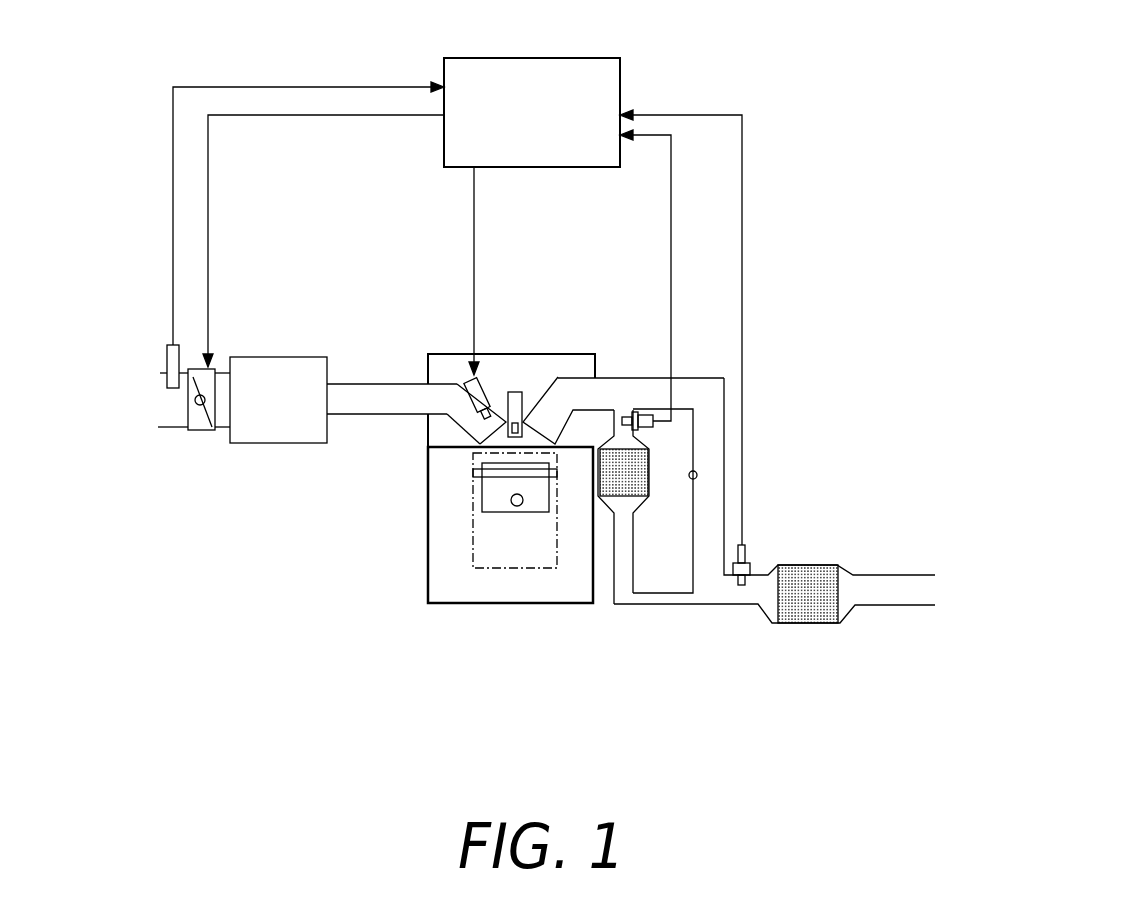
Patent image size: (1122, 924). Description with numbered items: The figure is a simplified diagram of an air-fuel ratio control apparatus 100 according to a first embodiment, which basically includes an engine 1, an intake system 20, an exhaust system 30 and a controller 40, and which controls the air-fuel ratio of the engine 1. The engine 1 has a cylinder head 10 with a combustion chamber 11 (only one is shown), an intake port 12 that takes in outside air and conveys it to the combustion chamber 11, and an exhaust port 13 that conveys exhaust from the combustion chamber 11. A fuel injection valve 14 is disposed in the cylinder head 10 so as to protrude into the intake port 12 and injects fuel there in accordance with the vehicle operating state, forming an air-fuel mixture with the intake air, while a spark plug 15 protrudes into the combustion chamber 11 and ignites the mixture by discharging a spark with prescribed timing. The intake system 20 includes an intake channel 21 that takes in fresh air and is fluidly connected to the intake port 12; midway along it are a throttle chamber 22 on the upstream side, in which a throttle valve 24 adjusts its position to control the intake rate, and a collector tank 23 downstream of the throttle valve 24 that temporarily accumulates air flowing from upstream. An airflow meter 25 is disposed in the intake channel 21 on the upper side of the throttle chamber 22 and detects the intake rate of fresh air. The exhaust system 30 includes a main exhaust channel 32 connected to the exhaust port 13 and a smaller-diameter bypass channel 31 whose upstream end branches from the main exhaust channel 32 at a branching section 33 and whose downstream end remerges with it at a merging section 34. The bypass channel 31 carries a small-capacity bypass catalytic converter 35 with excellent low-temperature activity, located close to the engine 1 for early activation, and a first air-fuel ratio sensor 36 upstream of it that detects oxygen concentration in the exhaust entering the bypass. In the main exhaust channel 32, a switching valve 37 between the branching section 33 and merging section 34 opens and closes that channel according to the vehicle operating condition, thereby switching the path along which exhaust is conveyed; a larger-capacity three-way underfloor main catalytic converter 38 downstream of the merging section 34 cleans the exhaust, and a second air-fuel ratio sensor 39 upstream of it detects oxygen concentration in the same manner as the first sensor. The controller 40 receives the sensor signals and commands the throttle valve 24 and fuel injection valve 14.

The engine 1 is at (578, 335).
The cylinder head 10 is at (453, 366).
The combustion chamber 11 is at (490, 440).
The intake port 12 is at (448, 380).
The exhaust port 13 is at (578, 378).
The fuel injection valve 14 is at (482, 392).
The spark plug 15 is at (520, 397).
The intake system 20 is at (333, 347).
The intake channel 21 is at (372, 417).
The throttle chamber 22 is at (188, 432).
The collector tank 23 is at (280, 437).
The throttle valve 24 is at (208, 429).
The airflow meter 25 is at (170, 358).
The exhaust system 30 is at (710, 367).
The bypass channel 31 is at (613, 550).
The main exhaust channel 32 is at (692, 538).
The branching section 33 is at (644, 395).
The merging section 34 is at (710, 598).
The bypass catalytic converter 35 is at (597, 470).
The first air-fuel ratio sensor 36 is at (646, 428).
The switching valve 37 is at (697, 474).
The main catalytic converter 38 is at (807, 623).
The second air-fuel ratio sensor 39 is at (744, 550).
The controller 40 is at (575, 72).
The air-fuel ratio control apparatus 100 is at (127, 267).